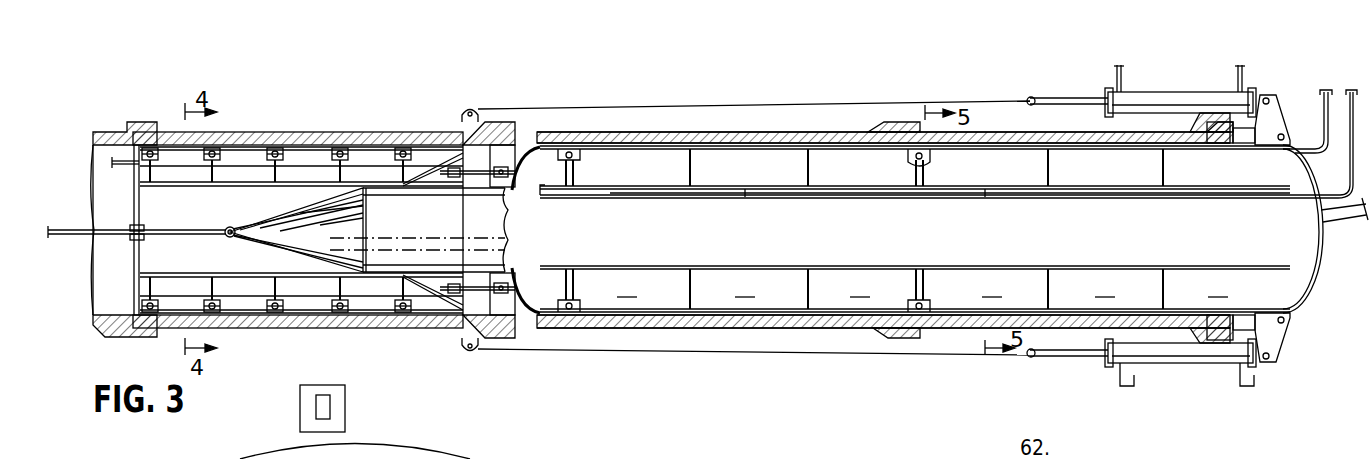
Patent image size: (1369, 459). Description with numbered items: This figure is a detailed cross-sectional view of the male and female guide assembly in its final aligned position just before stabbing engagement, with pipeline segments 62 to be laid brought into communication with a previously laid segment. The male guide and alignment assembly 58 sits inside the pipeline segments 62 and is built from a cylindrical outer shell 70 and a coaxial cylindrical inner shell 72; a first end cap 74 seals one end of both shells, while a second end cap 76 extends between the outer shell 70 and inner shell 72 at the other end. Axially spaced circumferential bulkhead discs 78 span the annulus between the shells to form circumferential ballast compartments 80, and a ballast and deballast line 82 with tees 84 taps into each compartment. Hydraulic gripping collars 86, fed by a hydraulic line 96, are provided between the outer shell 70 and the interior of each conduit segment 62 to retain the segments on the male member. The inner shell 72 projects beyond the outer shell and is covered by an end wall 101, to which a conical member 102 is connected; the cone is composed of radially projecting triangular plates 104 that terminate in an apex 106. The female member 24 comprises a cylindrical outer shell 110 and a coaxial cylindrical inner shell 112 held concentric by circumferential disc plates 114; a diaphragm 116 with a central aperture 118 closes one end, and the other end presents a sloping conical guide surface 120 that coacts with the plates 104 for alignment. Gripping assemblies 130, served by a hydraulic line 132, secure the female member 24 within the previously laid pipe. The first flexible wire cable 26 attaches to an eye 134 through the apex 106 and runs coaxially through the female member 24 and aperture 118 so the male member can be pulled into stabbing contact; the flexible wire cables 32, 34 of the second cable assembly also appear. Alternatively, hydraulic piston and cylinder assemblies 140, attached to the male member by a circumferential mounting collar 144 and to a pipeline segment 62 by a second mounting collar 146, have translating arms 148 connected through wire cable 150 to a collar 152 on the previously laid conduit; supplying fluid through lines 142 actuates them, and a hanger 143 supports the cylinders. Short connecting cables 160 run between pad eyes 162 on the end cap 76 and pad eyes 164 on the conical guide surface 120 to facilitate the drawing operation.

The female member 24 is at (335, 142).
The first flexible wire cable 26 is at (90, 229).
The first flexible wire cable 32 is at (1364, 220).
The second flexible wire cable 34 is at (1322, 213).
The male guide and alignment assembly 58 is at (750, 330).
The pipeline segments 62 is at (366, 131).
The cylindrical outer shell 70 is at (738, 150).
The cylindrical inner shell 72 is at (905, 266).
The first end cap 74 is at (1313, 176).
The second end cap 76 is at (520, 160).
The circumferential bulkhead discs 78 is at (580, 170).
The circumferential ballast compartments 80 is at (922, 284).
The ballast and deballast line 82 is at (1350, 90).
The tees 84 is at (746, 198).
The hydraulic gripping collar 86 is at (568, 313).
The hydraulic line 96 is at (1324, 90).
The end wall 101 is at (372, 243).
The conical member 102 is at (250, 218).
The triangular plates 104 is at (360, 197).
The apex 106 is at (240, 240).
The cylindrical outer shell 110 is at (240, 146).
The cylindrical inner shell 112 is at (290, 278).
The circumferential disc plates 114 is at (153, 170).
The diaphragm 116 is at (133, 260).
The central aperture 118 is at (133, 222).
The conical guide surface 120 is at (462, 150).
The gripping assemblies 130 is at (158, 148).
The hydraulic line 132 is at (117, 165).
The eye 134 is at (225, 236).
The hydraulic piston and cylinder assemblies 140 is at (1170, 81).
The hydraulic fluid lines 142 is at (1245, 72).
The cylinder hanger 143 is at (1116, 76).
The circumferential mounting collar 144 is at (1282, 128).
The second mounting collar 146 is at (1205, 115).
The translating arms 148 is at (1050, 98).
The wire cable 150 is at (714, 108).
The collar 152 is at (470, 108).
The short connecting cables 160 is at (484, 178).
The pad eyes 162 is at (572, 200).
The pad eyes 164 is at (445, 300).